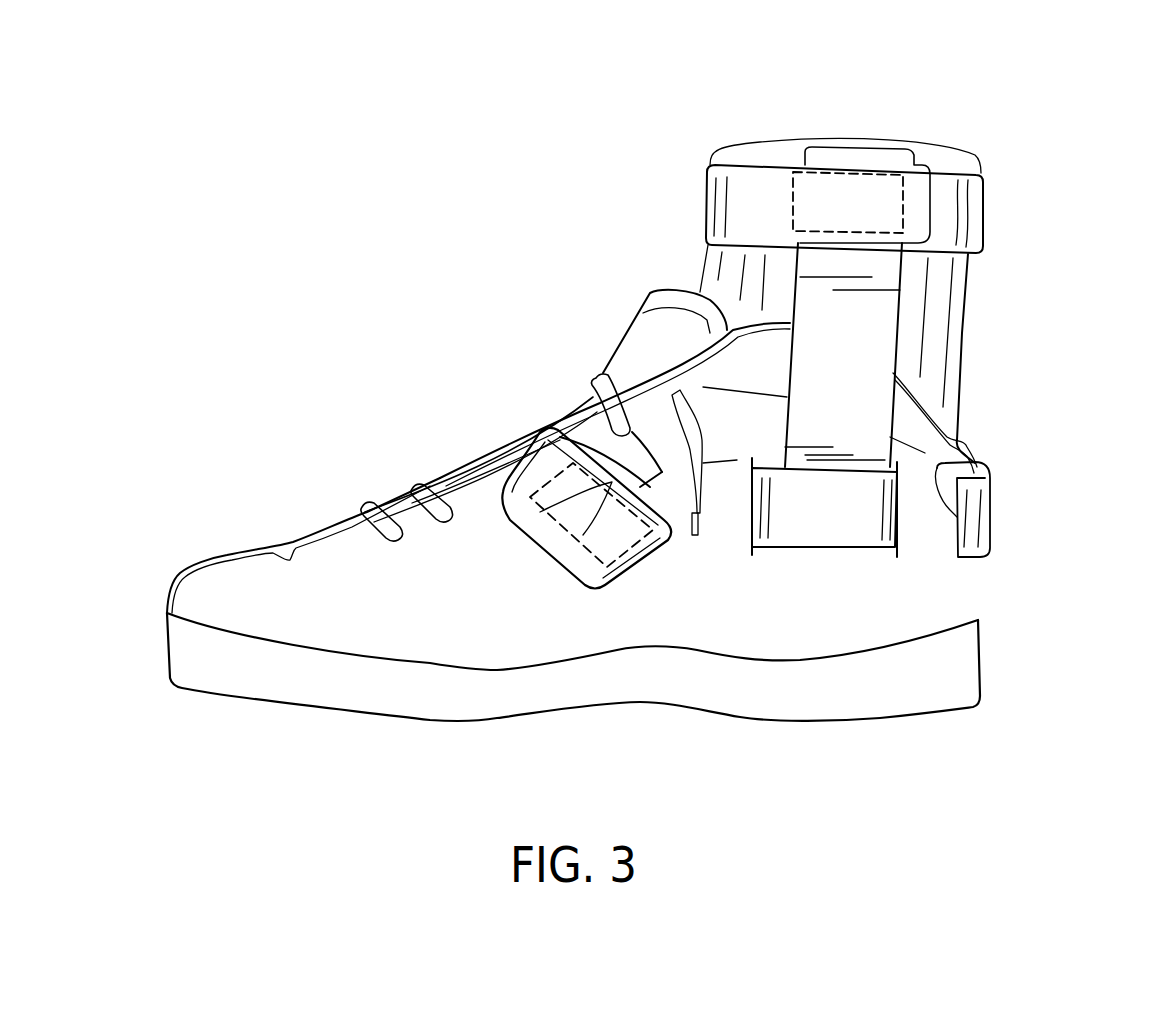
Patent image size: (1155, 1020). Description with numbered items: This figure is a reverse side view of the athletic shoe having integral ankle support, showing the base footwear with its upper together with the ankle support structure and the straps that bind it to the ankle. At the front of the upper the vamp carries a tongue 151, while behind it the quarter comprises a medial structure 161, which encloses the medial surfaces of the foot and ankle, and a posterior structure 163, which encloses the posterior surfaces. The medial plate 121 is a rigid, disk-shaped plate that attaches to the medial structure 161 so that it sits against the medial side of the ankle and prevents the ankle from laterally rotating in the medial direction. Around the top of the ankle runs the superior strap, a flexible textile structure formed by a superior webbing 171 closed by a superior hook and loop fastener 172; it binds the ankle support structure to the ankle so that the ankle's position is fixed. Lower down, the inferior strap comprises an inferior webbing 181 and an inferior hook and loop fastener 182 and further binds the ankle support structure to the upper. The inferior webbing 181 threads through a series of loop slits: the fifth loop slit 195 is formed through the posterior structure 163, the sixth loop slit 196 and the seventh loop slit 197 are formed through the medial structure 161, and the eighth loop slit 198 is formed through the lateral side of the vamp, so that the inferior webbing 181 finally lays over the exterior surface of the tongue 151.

The medial plate 121 is at (877, 350).
The tongue 151 is at (650, 290).
The medial structure 161 is at (812, 592).
The posterior structure 163 is at (983, 593).
The superior webbing 171 is at (980, 220).
The superior hook and loop fastener 172 is at (848, 193).
The inferior webbing 181 is at (503, 500).
The inferior hook and loop fastener 182 is at (612, 483).
The fifth loop slit 195 is at (970, 463).
The sixth loop slit 196 is at (900, 522).
The seventh loop slit 197 is at (748, 509).
The eighth loop slit 198 is at (597, 412).